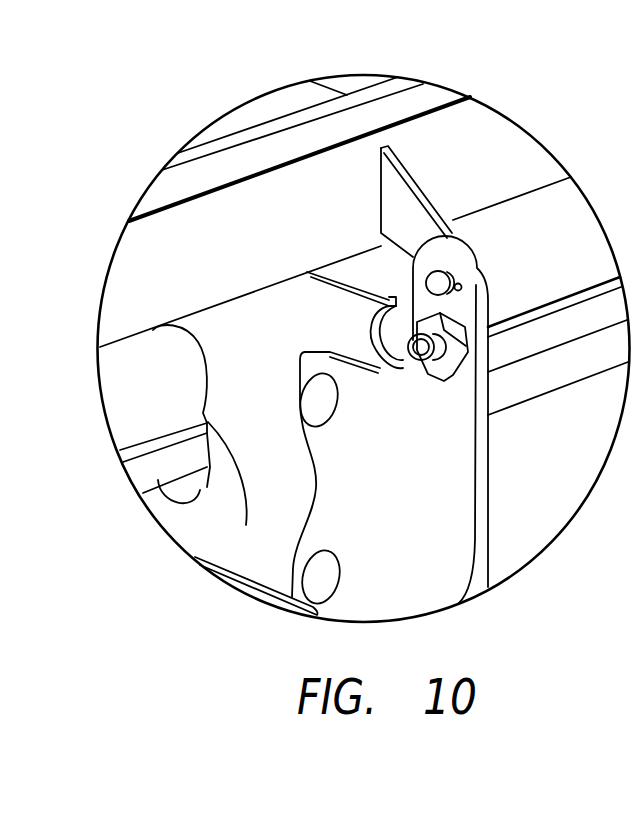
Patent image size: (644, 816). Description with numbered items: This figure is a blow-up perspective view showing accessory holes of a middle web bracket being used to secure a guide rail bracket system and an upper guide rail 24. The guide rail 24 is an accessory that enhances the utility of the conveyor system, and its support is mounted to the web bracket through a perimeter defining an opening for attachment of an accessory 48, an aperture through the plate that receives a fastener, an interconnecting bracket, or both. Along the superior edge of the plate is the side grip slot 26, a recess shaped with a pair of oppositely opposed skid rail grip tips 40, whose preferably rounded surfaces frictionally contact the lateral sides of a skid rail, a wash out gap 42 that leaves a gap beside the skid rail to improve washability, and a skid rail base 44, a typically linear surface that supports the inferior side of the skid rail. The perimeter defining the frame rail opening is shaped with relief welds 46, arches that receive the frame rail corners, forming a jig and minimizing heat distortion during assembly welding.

The guide rail 24 is at (282, 200).
The side grip slot 26 is at (405, 308).
The skid rail grip tip 40 is at (380, 307).
The wash out gap 42 is at (380, 342).
The skid rail base 44 is at (397, 362).
The relief weld 46 is at (246, 525).
The perimeter defining an opening for attachment of an accessory 48 is at (210, 362).